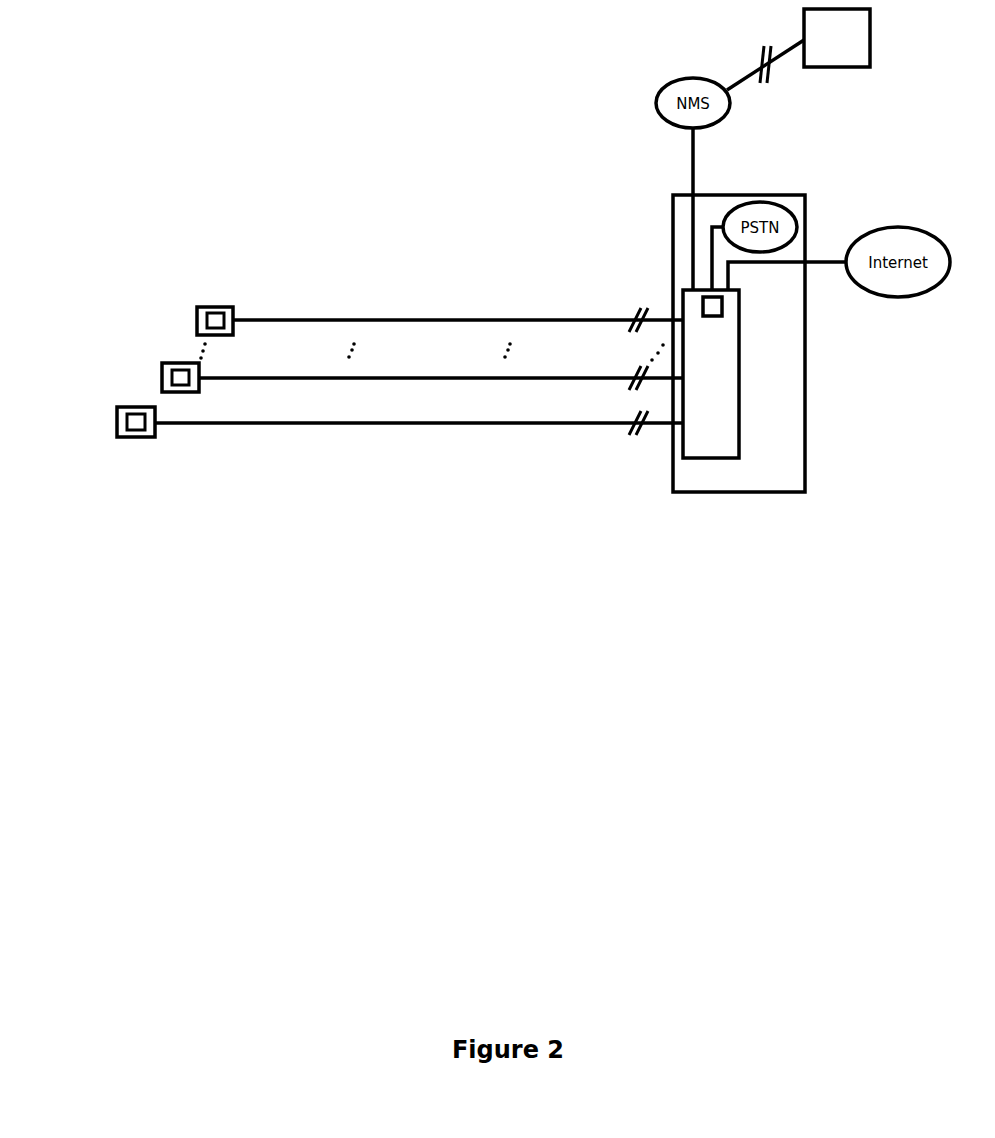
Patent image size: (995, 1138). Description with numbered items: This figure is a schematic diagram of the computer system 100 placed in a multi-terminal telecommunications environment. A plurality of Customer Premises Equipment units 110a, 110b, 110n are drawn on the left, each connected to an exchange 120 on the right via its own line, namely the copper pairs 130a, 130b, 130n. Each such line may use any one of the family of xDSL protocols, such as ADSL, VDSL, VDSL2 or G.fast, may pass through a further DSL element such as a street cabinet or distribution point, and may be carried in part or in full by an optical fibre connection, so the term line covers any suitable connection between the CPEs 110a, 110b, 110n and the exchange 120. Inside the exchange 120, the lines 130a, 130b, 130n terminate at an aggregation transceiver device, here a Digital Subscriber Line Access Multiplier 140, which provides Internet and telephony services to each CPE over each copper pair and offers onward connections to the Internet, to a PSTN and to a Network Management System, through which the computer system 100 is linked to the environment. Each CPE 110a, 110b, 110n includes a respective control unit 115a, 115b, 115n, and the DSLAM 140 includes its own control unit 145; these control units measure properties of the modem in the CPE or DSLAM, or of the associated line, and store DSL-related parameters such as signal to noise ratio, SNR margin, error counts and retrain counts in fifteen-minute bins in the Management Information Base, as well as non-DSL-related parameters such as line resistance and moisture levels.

The computer system 100 is at (798, 49).
The Customer Premises Equipment 110a is at (117, 422).
The Customer Premises Equipment 110b is at (162, 378).
The Customer Premises Equipment 110n is at (197, 319).
The control unit 115a is at (132, 410).
The control unit 115b is at (176, 366).
The control unit 115n is at (211, 310).
The exchange 120 is at (805, 356).
The copper pair 130a is at (280, 422).
The copper pair 130b is at (320, 377).
The copper pair 130n is at (357, 318).
The Digital Subscriber Line Access Multiplier 140 is at (710, 460).
The control unit 145 is at (722, 307).